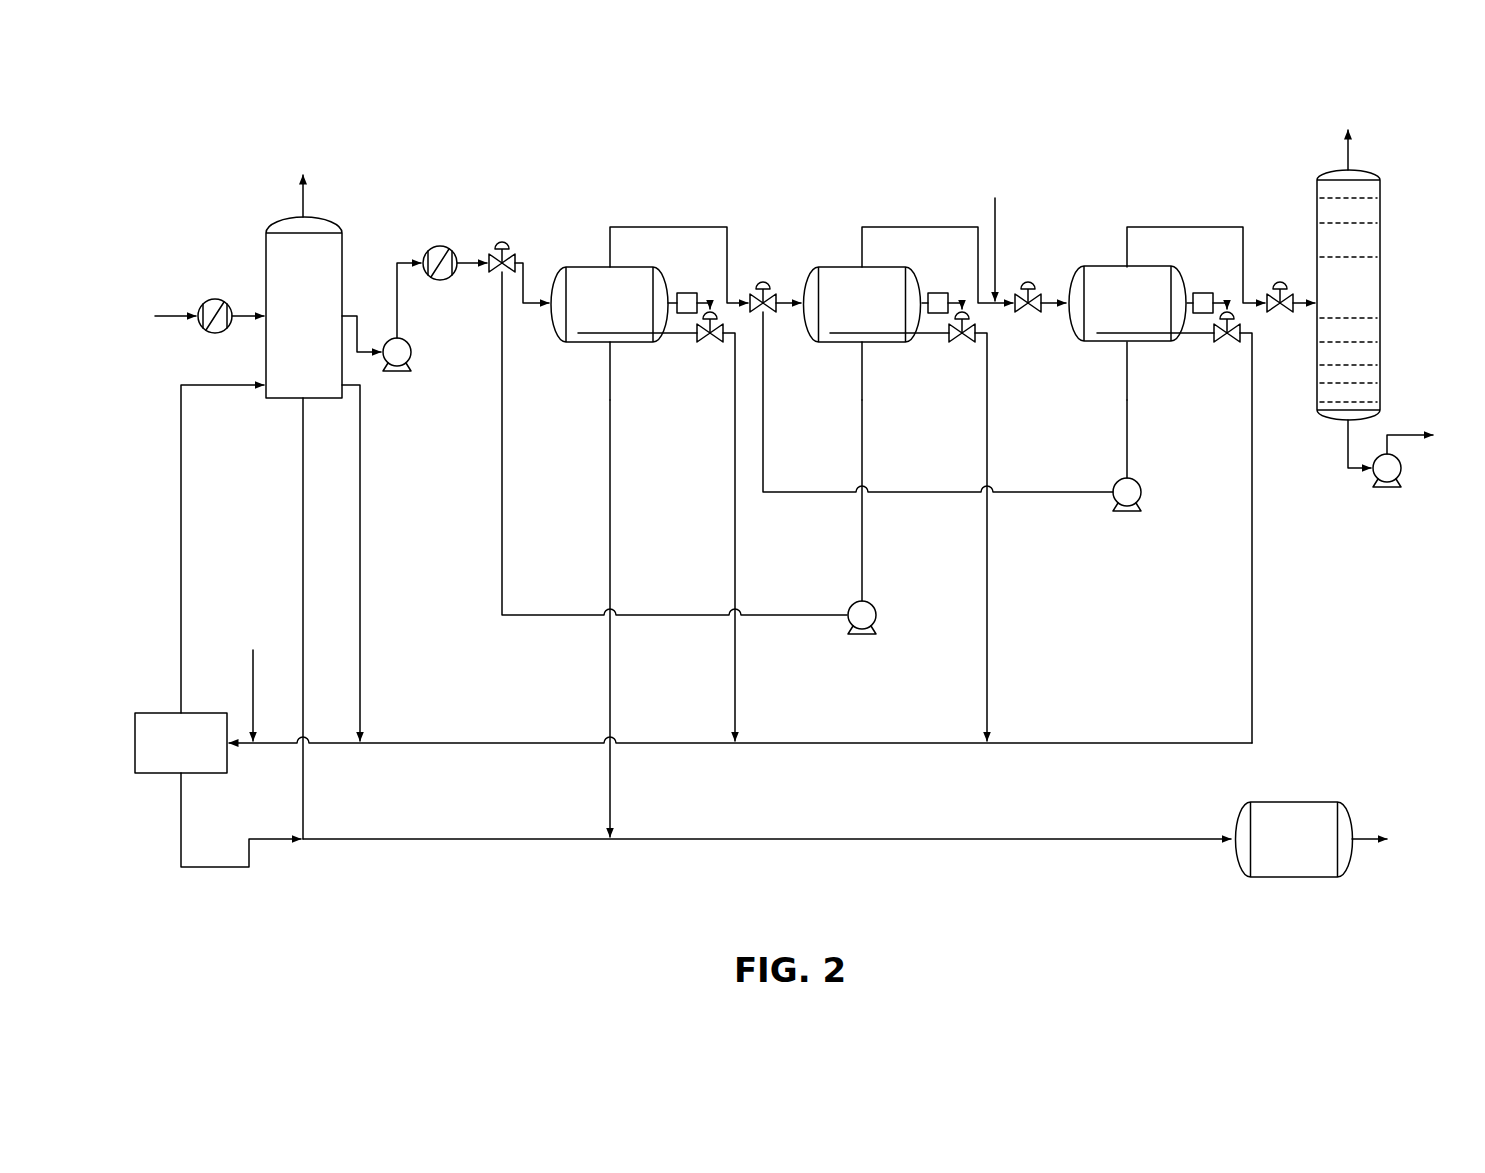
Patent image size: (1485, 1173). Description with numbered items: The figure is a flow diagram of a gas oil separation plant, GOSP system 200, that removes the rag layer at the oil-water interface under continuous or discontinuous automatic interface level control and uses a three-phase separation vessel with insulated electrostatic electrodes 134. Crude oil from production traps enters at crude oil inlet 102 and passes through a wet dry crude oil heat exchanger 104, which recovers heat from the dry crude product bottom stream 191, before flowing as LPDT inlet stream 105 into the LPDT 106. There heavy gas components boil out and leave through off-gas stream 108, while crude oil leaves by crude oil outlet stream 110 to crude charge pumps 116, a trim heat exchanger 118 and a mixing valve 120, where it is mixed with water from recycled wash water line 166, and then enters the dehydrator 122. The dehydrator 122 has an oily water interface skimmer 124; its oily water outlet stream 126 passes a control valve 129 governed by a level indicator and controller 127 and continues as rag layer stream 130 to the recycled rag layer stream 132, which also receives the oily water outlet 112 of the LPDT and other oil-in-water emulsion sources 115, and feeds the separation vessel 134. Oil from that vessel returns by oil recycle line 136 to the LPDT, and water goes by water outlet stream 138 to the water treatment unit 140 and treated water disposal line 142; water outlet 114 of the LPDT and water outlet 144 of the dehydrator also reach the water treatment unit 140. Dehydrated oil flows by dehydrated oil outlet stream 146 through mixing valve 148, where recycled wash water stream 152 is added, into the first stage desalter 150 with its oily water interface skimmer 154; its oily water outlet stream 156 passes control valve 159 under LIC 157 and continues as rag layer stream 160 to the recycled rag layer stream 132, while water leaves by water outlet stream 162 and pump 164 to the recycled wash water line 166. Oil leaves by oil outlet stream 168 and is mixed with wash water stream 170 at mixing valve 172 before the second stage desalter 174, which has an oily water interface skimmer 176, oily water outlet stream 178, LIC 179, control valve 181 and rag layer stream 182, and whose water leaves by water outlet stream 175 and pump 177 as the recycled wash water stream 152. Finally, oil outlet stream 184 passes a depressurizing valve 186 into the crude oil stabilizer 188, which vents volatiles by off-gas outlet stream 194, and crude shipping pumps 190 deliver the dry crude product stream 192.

The GOSP system 200 is at (823, 125).
The crude oil inlet 102 is at (172, 314).
The wet dry crude oil heat exchanger 104 is at (215, 299).
The LPDT inlet stream 105 is at (244, 313).
The LPDT 106 is at (283, 317).
The off-gas stream 108 is at (300, 193).
The crude oil outlet stream 110 is at (356, 313).
The oily water outlet 112 is at (361, 652).
The water outlet 114 is at (302, 572).
The other oil-in-water emulsion sources 115 is at (254, 663).
The crude charge pumps 116 is at (411, 350).
The trim heat exchanger 118 is at (440, 246).
The mixing valve 120 is at (502, 241).
The dehydrator 122 is at (592, 318).
The oily water interface skimmer 124 is at (599, 343).
The oily water outlet stream 126 is at (684, 335).
The level indicator and controller 127 is at (687, 292).
The control valve 129 is at (710, 343).
The rag layer stream 130 is at (736, 675).
The recycled rag layer stream 132 is at (563, 741).
The three-phase separation vessel with insulated electrostatic electrodes 134 is at (161, 758).
The oil recycle line 136 is at (182, 455).
The water outlet stream 138 is at (250, 860).
The water treatment unit 140 is at (1275, 854).
The treated water disposal line 142 is at (1365, 832).
The water outlet 144 is at (609, 492).
The dehydrated oil outlet stream 146 is at (697, 226).
The mixing valve 148 is at (763, 281).
The first stage desalter 150 is at (843, 318).
The recycled wash water stream 152 is at (764, 447).
The oily water interface skimmer 154 is at (851, 343).
The oily water outlet stream 156 is at (936, 335).
The level indicator and controller 157 is at (937, 292).
The control valve 159 is at (962, 343).
The rag layer stream 160 is at (988, 675).
The water outlet stream 162 is at (863, 555).
The pump 164 is at (877, 615).
The recycled wash water line 166 is at (503, 545).
The oil outlet stream 168 is at (950, 226).
The wash water stream 170 is at (996, 216).
The mixing valve 172 is at (1028, 281).
The second stage desalter 174 is at (1108, 318).
The water outlet stream 175 is at (1128, 450).
The oily water interface skimmer 176 is at (1116, 343).
The pump 177 is at (1135, 512).
The oily water outlet stream 178 is at (1201, 335).
The level indicator and controller 179 is at (1202, 292).
The control valve 181 is at (1227, 343).
The rag layer stream 182 is at (1253, 622).
The oil outlet stream 184 is at (1215, 226).
The depressurizing valve 186 is at (1280, 281).
The crude oil stabilizer 188 is at (1327, 302).
The crude shipping pumps 190 is at (1387, 489).
The dry crude product bottom stream 191 is at (1347, 456).
The dry crude product stream 192 is at (1388, 434).
The off-gas outlet stream 194 is at (1354, 153).